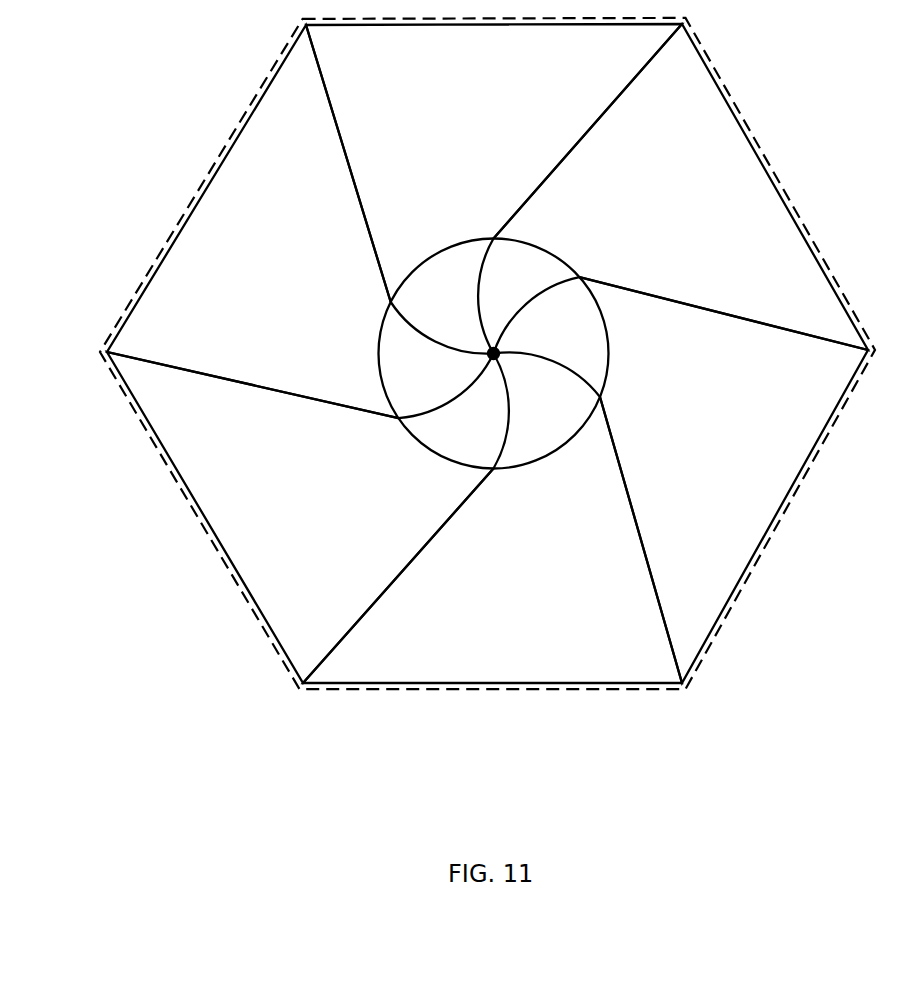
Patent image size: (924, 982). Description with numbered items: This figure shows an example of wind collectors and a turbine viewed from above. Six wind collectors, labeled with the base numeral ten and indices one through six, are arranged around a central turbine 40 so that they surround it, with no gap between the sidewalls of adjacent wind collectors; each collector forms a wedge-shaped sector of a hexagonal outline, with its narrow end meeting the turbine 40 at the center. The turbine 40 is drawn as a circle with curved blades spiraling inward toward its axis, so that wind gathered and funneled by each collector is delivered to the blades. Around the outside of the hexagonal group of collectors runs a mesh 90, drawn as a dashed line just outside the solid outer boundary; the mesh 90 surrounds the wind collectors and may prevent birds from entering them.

The mesh 90 is at (277, 62).
The turbine 40 is at (454, 296).